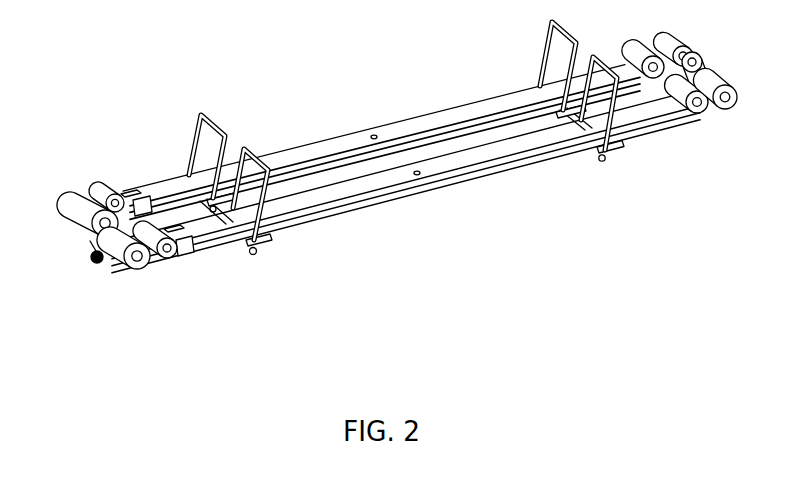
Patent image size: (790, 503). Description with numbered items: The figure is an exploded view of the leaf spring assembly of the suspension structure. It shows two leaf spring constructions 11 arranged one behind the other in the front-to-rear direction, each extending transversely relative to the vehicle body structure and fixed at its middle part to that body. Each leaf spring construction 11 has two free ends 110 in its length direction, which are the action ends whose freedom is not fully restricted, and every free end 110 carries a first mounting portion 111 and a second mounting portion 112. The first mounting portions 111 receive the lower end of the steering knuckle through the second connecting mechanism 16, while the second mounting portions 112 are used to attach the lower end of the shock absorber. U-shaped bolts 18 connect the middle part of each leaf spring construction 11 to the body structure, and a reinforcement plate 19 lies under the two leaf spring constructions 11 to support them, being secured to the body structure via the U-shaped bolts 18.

The leaf spring construction 11 is at (345, 132).
The second connecting mechanism 16 is at (94, 233).
The U-shaped bolt 18 is at (216, 124).
The reinforcement plate 19 is at (257, 258).
The free end 110 is at (127, 272).
The first mounting portion 111 is at (123, 277).
The second mounting portion 112 is at (171, 248).